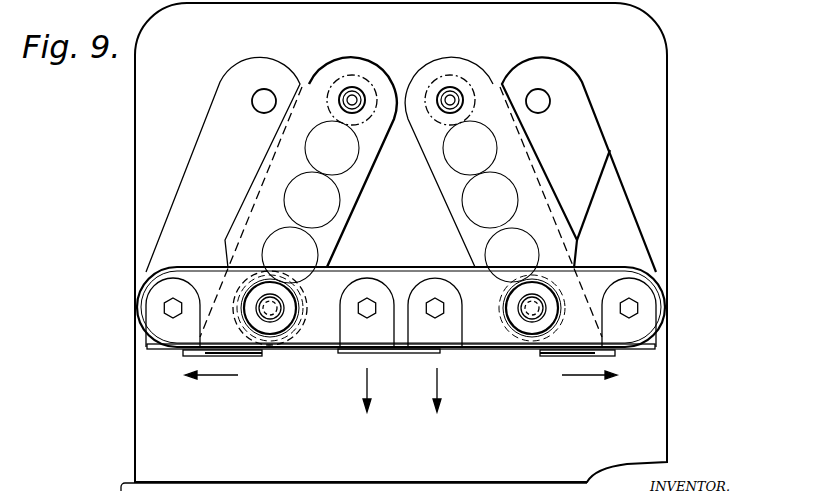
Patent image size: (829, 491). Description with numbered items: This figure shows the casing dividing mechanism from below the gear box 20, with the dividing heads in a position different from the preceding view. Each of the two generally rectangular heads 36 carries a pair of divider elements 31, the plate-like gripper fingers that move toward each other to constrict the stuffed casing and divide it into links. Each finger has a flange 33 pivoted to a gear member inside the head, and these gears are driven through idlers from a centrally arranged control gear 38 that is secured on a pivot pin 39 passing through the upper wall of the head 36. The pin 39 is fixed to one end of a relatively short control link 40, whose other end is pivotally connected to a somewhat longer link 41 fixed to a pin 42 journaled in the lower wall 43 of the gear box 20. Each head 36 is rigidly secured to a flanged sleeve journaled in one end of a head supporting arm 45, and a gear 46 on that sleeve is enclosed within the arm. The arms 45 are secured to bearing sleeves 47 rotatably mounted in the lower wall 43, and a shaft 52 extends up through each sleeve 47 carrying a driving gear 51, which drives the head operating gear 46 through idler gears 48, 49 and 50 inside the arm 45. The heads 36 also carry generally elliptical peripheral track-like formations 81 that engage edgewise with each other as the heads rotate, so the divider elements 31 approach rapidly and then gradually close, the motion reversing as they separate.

The gear box 20 is at (660, 73).
The lower wall 43 is at (662, 167).
The head supporting arm 45 is at (272, 194).
The link 41 is at (604, 188).
The pin 42 is at (550, 102).
The bearing sleeve 47 is at (437, 92).
The shaft 52 is at (352, 98).
The idler gear 50 is at (305, 136).
The pivot pin 39 is at (264, 378).
The driving gear 51 is at (330, 75).
The idler gear 49 is at (460, 203).
The idler gear 48 is at (480, 260).
The control link 40 is at (619, 267).
The track-like formation 81 is at (212, 267).
The flange 33 is at (423, 295).
The head 36 is at (305, 348).
The control gear 38 is at (293, 297).
The gear 46 is at (318, 348).
The divider element 31 is at (168, 350).